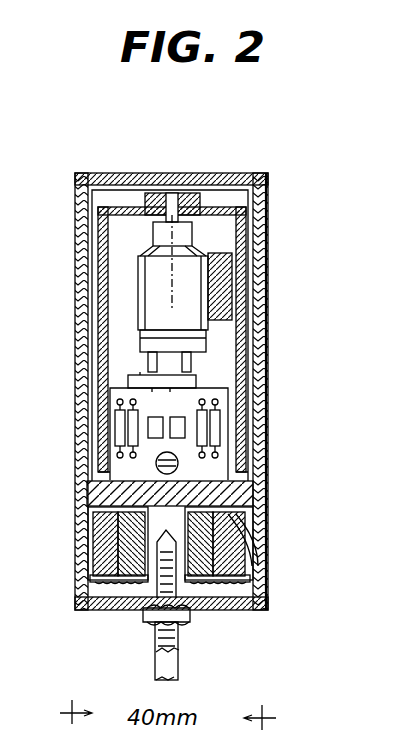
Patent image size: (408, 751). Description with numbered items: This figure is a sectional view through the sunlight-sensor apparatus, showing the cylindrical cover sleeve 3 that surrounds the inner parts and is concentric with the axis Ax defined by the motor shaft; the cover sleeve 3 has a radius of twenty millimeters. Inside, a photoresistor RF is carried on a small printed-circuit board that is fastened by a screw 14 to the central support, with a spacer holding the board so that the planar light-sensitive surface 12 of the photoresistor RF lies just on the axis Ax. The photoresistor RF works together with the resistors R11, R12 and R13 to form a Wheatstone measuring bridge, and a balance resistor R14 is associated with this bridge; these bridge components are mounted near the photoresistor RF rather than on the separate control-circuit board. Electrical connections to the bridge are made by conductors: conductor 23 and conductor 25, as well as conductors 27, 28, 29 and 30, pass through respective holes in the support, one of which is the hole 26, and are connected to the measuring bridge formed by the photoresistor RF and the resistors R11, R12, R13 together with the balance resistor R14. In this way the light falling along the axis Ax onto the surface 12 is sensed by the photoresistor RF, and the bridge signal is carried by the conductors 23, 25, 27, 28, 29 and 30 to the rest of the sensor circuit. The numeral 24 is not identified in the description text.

The cover sleeve 3 is at (266, 390).
The photoresistor RF is at (125, 380).
The resistor R13 is at (115, 415).
The balance resistor R14 is at (133, 432).
The resistor R11 is at (222, 424).
The resistor R12 is at (232, 436).
The light-sensitive surface 12 is at (180, 417).
The screw 14 is at (180, 468).
The conductor 23 is at (100, 497).
The left coil 24 is at (112, 550).
The conductor 25 is at (115, 572).
The hole 26 is at (268, 492).
The conductor 27 is at (215, 512).
The conductor 28 is at (222, 514).
The conductor 29 is at (232, 516).
The conductor 30 is at (208, 608).
The axis Ax is at (168, 283).